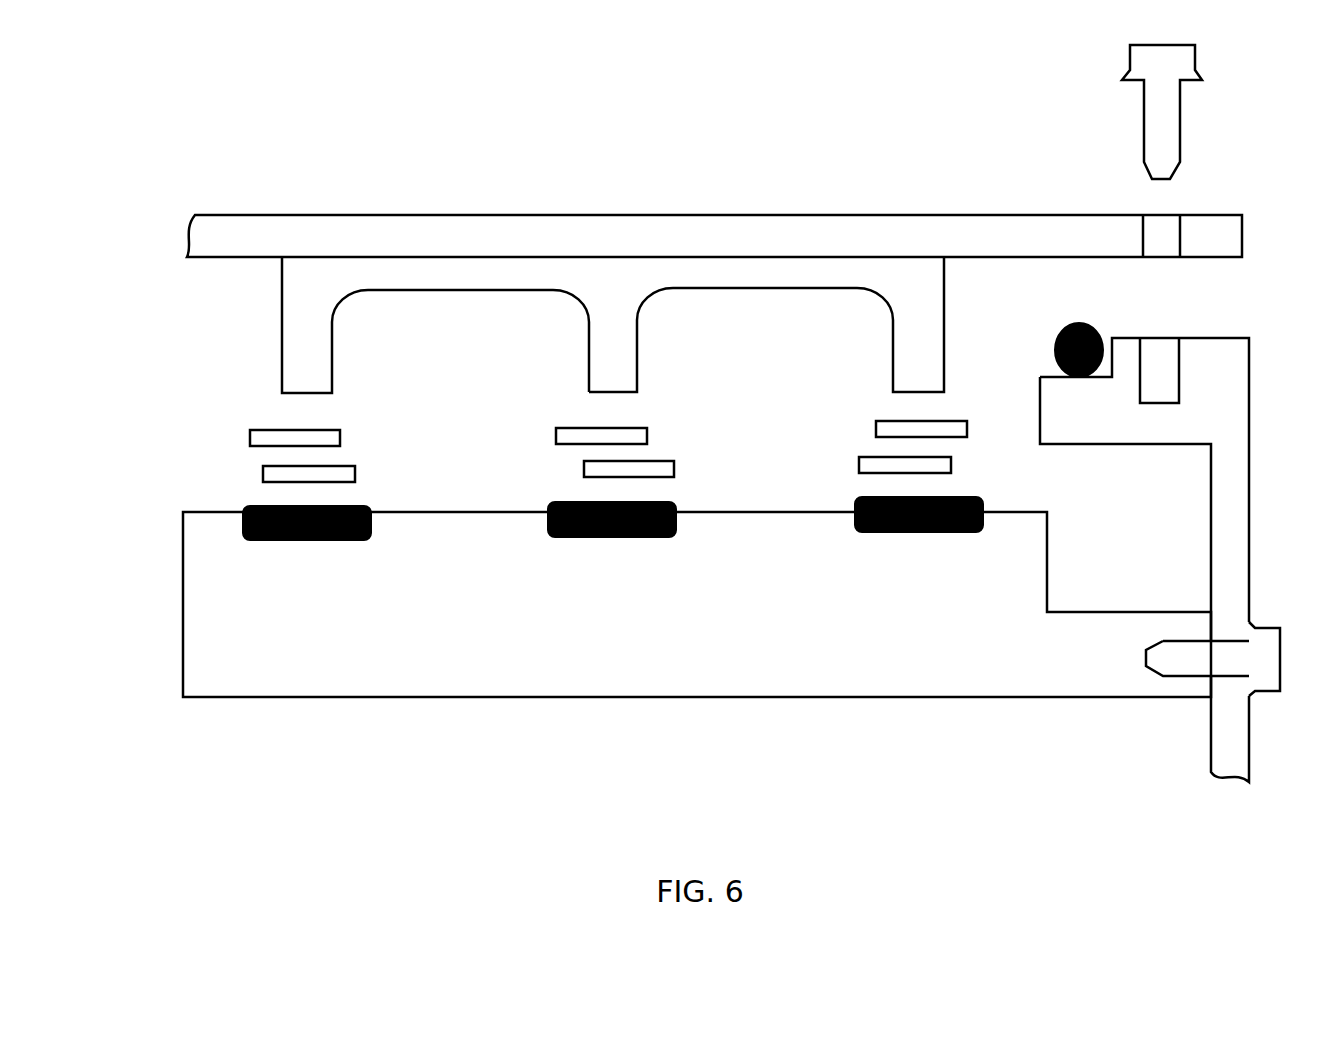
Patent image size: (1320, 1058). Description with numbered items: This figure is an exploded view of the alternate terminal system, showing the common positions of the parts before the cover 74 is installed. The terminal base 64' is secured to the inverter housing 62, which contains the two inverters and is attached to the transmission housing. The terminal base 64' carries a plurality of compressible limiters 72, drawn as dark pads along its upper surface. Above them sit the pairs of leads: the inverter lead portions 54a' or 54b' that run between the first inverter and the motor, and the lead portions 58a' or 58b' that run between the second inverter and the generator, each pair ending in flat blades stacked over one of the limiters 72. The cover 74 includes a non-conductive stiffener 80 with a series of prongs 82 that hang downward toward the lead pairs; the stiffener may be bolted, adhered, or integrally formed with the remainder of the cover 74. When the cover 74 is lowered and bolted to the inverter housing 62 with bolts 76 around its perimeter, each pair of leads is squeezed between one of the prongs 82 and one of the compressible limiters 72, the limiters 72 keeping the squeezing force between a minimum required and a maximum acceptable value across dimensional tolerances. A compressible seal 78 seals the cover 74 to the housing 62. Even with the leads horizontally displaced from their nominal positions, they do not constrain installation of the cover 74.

The inverter lead 54a' is at (545, 408).
The motor lead 54b' is at (545, 408).
The inverter lead 58a' is at (607, 450).
The motor lead 58b' is at (607, 450).
The inverter housing 62 is at (1163, 444).
The terminal base 64' is at (697, 645).
The compressible limiter 72 is at (335, 540).
The cover 74 is at (938, 215).
The bolt 76 is at (1142, 135).
The compressible seal 78 is at (1056, 350).
The non-conductive stiffener 80 is at (613, 326).
The prong 82 is at (332, 357).